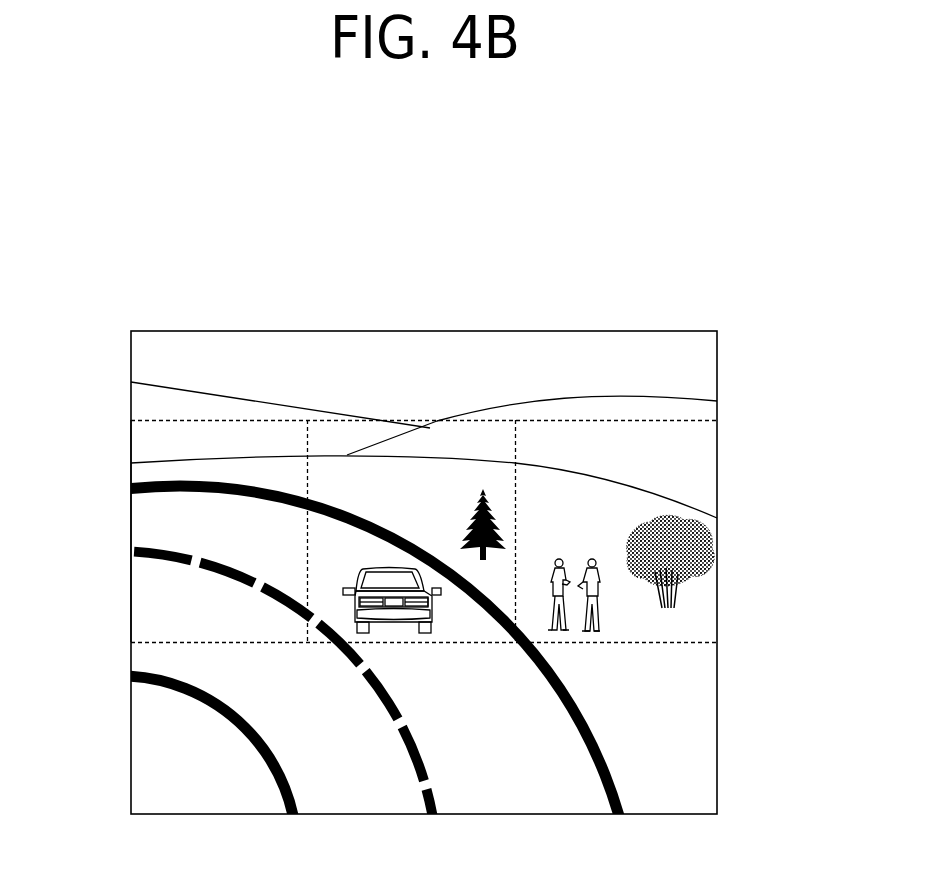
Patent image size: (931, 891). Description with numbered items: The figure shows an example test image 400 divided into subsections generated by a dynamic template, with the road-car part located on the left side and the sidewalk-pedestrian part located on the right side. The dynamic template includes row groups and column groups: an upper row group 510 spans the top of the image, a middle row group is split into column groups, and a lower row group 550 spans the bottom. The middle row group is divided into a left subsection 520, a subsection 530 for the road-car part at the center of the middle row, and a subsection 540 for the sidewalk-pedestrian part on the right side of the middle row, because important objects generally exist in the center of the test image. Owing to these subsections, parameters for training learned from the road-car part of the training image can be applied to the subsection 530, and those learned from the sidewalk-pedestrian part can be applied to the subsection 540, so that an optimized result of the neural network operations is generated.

The image 400 is at (602, 330).
The first region 510 is at (508, 348).
The second region 520 is at (140, 603).
The subsection for the road-car part 530 is at (378, 445).
The subsection for the sidewalk-pedestrian part 540 is at (705, 604).
The fifth region 550 is at (500, 803).